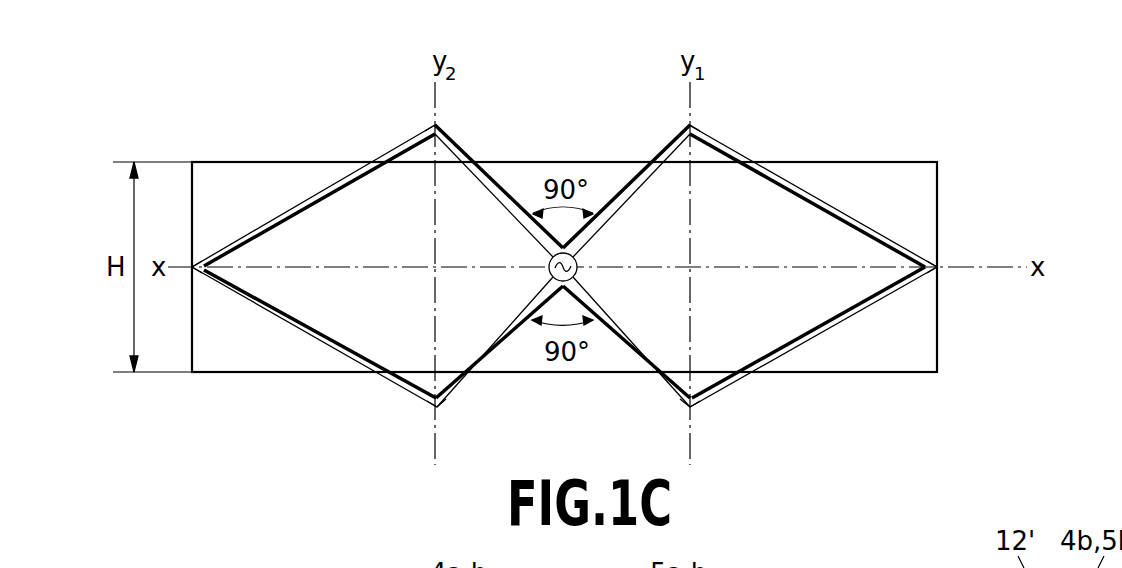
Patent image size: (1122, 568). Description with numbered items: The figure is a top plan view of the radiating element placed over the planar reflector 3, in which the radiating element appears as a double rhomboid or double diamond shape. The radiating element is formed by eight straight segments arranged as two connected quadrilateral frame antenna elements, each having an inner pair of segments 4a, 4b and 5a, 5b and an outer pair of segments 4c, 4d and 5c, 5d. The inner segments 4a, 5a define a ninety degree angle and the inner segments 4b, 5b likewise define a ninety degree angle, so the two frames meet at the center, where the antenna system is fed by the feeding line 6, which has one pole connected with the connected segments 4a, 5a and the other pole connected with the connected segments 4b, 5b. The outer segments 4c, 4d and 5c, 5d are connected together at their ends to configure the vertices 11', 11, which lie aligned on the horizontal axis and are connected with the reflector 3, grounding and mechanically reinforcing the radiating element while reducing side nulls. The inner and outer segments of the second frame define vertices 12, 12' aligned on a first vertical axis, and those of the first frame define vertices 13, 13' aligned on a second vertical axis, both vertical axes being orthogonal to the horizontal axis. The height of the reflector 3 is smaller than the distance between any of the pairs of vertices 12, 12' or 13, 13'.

The planar reflector 3 is at (905, 176).
The inner segment 4a is at (498, 184).
The inner segment 4b is at (504, 345).
The outer segment 4c is at (289, 209).
The outer segment 4d is at (307, 333).
The inner segment 5a is at (652, 176).
The inner segment 5b is at (634, 350).
The outer segment 5c is at (816, 196).
The outer segment 5d is at (843, 325).
The feeding line 6 is at (578, 262).
The vertex 11 is at (976, 233).
The vertex 11' is at (133, 218).
The vertex 12 is at (737, 90).
The vertex 12' is at (727, 429).
The vertex 13 is at (393, 90).
The vertex 13' is at (410, 429).